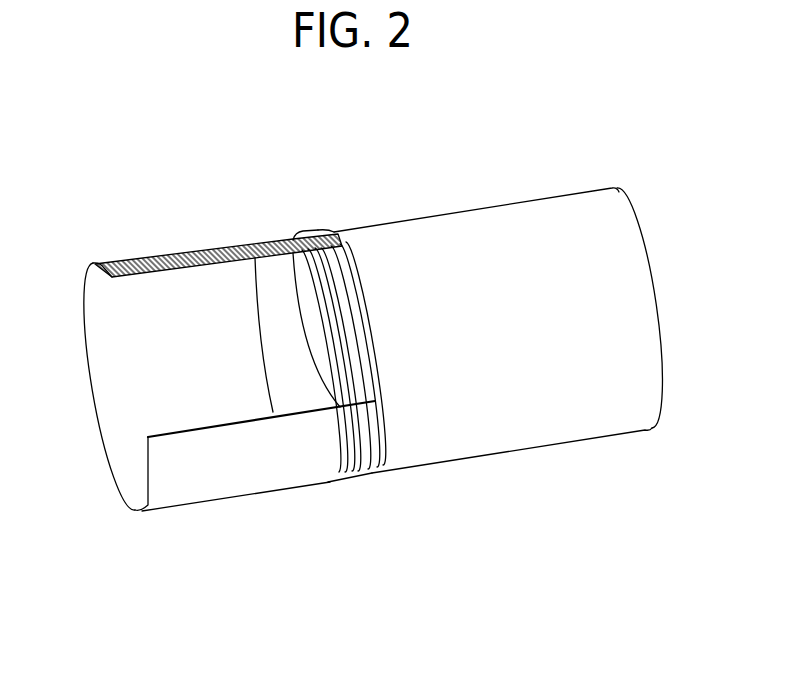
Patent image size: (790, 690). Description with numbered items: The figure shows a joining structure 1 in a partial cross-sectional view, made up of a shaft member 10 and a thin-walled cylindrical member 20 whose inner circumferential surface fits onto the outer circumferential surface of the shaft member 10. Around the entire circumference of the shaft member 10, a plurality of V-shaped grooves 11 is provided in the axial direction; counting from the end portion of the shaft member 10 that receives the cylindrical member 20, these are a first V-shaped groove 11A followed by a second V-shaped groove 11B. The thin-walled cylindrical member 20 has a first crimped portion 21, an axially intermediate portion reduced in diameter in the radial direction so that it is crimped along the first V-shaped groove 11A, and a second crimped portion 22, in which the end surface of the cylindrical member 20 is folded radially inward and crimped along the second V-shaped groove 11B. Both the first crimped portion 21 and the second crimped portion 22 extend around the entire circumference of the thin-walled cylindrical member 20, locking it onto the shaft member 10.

The joining structure 1 is at (587, 148).
The shaft member 10 is at (515, 220).
The V-shaped grooves 11 is at (508, 488).
The first V-shaped groove 11A is at (340, 372).
The second V-shaped groove 11B is at (363, 327).
The thin-walled cylindrical member 20 is at (188, 256).
The first crimped portion 21 is at (292, 231).
The second crimped portion 22 is at (330, 227).